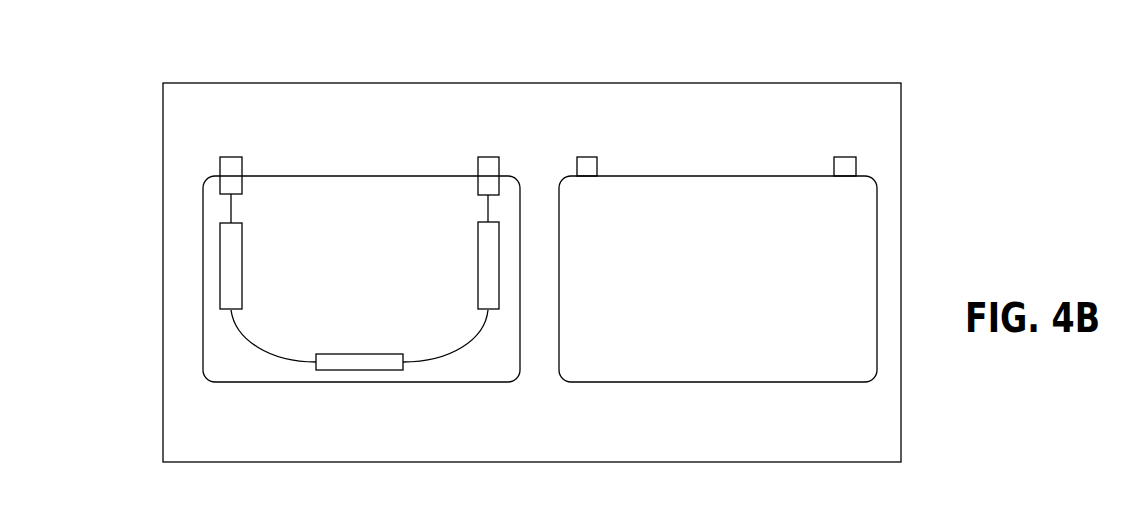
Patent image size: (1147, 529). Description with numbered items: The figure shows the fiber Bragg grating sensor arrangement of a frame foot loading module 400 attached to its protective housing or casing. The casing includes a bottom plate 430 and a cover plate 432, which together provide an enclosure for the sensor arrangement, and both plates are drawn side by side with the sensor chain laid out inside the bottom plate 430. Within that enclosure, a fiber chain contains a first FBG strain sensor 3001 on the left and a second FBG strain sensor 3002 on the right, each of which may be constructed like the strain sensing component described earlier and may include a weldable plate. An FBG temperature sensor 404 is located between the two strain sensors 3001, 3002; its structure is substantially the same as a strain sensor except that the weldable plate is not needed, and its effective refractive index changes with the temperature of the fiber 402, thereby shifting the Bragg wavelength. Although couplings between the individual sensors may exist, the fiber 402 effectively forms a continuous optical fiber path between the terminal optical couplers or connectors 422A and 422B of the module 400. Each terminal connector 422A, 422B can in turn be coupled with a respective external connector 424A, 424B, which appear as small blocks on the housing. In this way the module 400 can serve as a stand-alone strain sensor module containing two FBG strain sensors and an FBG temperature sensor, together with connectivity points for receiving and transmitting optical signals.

The module 400 is at (925, 112).
The fiber 402 is at (460, 349).
The FBG temperature sensor 404 is at (360, 363).
The terminal optical connector 422A is at (225, 185).
The terminal optical connector 422B is at (494, 180).
The external connector 424A is at (235, 157).
The external connector 424B is at (489, 157).
The bottom plate 430 is at (338, 182).
The cover plate 432 is at (652, 363).
The first FBG strain sensor 3001 is at (227, 258).
The second FBG strain sensor 3002 is at (485, 282).